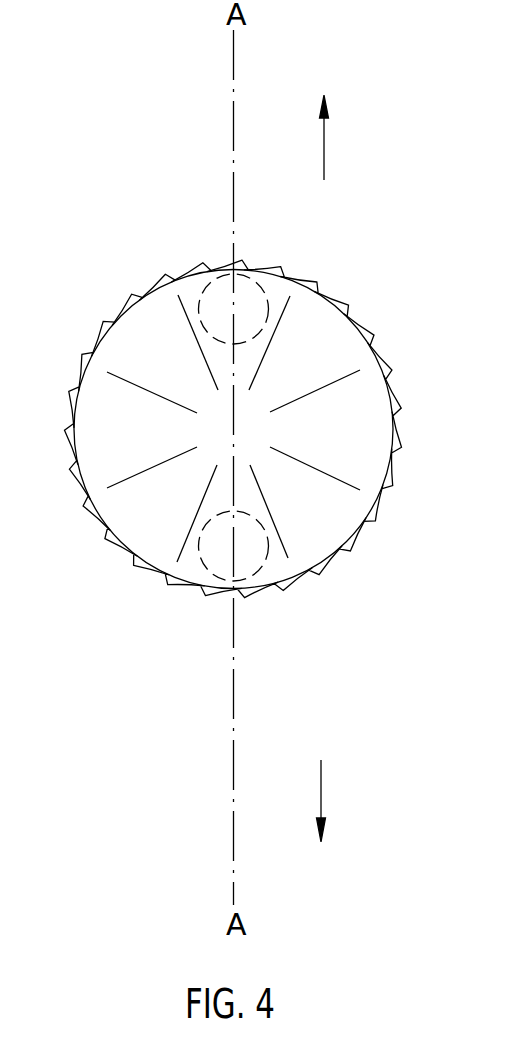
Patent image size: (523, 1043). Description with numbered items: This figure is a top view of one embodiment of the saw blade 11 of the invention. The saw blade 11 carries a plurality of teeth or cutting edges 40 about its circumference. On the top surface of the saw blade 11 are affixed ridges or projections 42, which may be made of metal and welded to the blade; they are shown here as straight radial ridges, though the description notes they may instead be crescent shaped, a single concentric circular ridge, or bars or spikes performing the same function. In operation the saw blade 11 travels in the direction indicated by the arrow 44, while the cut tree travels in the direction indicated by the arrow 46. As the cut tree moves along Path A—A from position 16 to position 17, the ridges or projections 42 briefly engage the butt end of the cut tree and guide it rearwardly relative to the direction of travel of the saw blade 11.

The saw blade 11 is at (373, 435).
The position 16 is at (241, 289).
The position 17 is at (242, 567).
The teeth or cutting edges 40 is at (380, 480).
The ridges or projections 42 is at (347, 372).
The arrow 44 is at (346, 137).
The arrow 46 is at (346, 801).